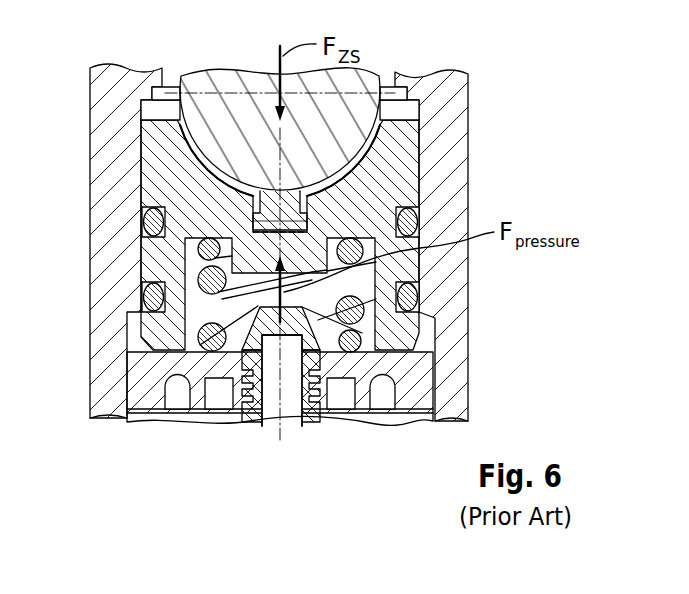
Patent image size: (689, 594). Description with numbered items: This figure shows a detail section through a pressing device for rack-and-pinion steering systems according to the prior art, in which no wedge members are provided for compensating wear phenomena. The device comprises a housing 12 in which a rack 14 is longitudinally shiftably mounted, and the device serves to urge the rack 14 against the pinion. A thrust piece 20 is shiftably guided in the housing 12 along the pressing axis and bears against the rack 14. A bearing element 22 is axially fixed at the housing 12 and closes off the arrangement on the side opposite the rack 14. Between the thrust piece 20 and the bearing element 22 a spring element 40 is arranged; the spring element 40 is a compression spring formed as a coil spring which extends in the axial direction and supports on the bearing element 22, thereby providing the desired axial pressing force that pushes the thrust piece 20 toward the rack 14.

The housing 12 is at (458, 112).
The rack 14 is at (236, 78).
The thrust piece 20 is at (167, 165).
The bearing element 22 is at (450, 388).
The spring element 40 is at (232, 255).